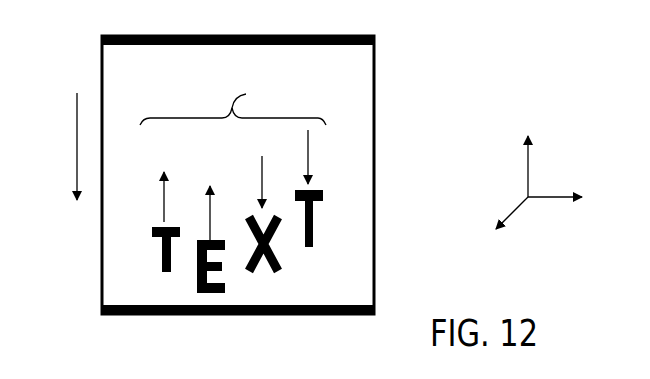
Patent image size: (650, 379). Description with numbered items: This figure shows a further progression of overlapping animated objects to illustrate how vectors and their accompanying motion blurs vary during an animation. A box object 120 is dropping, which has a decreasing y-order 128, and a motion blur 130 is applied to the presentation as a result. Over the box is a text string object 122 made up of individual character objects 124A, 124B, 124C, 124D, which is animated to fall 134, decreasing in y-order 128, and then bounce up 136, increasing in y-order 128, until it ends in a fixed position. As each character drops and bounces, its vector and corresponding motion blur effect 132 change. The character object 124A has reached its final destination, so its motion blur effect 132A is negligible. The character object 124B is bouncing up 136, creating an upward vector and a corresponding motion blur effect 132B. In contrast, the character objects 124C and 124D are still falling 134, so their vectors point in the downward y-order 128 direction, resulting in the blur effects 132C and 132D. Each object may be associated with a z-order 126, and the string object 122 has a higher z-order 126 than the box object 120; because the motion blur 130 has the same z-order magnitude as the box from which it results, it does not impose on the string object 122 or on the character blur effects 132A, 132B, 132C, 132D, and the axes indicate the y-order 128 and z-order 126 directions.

The box object 120 is at (266, 175).
The motion blur 130 is at (375, 37).
The text string object 122 is at (233, 102).
The character object 124A is at (104, 270).
The motion blur effect 132A is at (166, 273).
The character object 124B is at (204, 297).
The motion blur effect 132B is at (211, 293).
The character object 124C is at (298, 281).
The motion blur effect 132C is at (278, 223).
The character object 124D is at (370, 204).
The motion blur effect 132D is at (315, 192).
The motion blur effect 132 is at (162, 211).
The bounce up 136 is at (213, 216).
The fall 134 is at (77, 126).
The z-order 126 is at (515, 212).
The y-order 128 is at (549, 189).